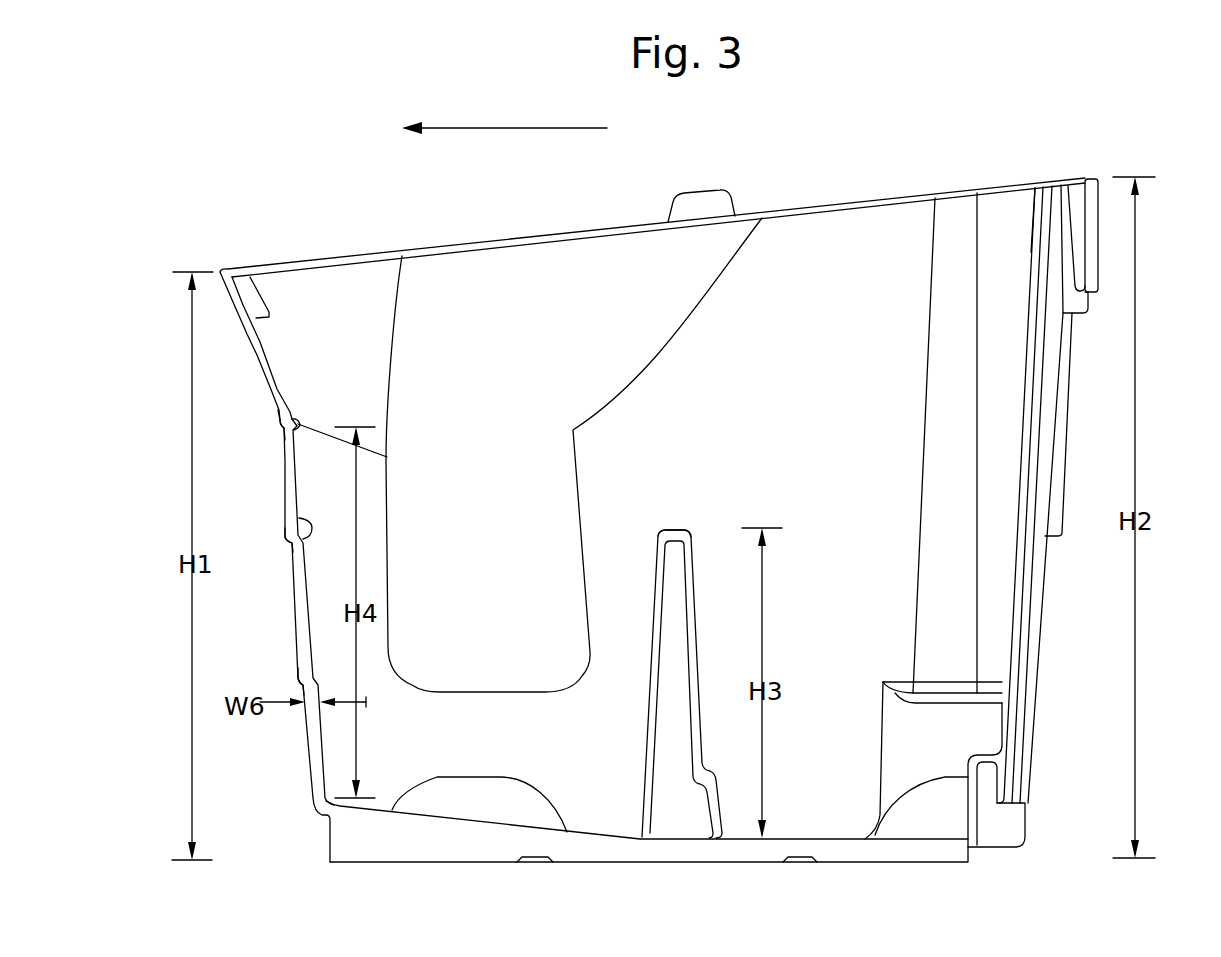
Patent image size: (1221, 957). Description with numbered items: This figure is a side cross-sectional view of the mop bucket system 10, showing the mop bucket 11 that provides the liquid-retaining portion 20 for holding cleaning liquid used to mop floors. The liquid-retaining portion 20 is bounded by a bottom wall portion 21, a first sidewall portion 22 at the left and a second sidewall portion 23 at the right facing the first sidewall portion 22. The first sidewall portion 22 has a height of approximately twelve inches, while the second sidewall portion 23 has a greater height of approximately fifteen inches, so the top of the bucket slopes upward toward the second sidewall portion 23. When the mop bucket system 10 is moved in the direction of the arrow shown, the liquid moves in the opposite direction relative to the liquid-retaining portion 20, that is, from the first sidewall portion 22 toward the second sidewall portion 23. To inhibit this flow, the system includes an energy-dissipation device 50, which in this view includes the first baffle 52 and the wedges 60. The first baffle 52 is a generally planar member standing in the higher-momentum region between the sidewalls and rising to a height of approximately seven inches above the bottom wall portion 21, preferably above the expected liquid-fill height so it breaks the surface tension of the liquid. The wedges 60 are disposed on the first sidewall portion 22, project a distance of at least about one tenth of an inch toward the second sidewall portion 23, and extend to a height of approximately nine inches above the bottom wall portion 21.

The mop bucket system 10 is at (822, 174).
The mop bucket 11 is at (1037, 557).
The liquid-retaining portion 20 is at (1035, 590).
The bottom wall portion 21 is at (868, 862).
The first sidewall portion 22 is at (261, 347).
The second sidewall portion 23 is at (1063, 353).
The energy-dissipation device 50 is at (280, 430).
The first baffle 52 is at (655, 530).
The wedges 60 is at (298, 424).